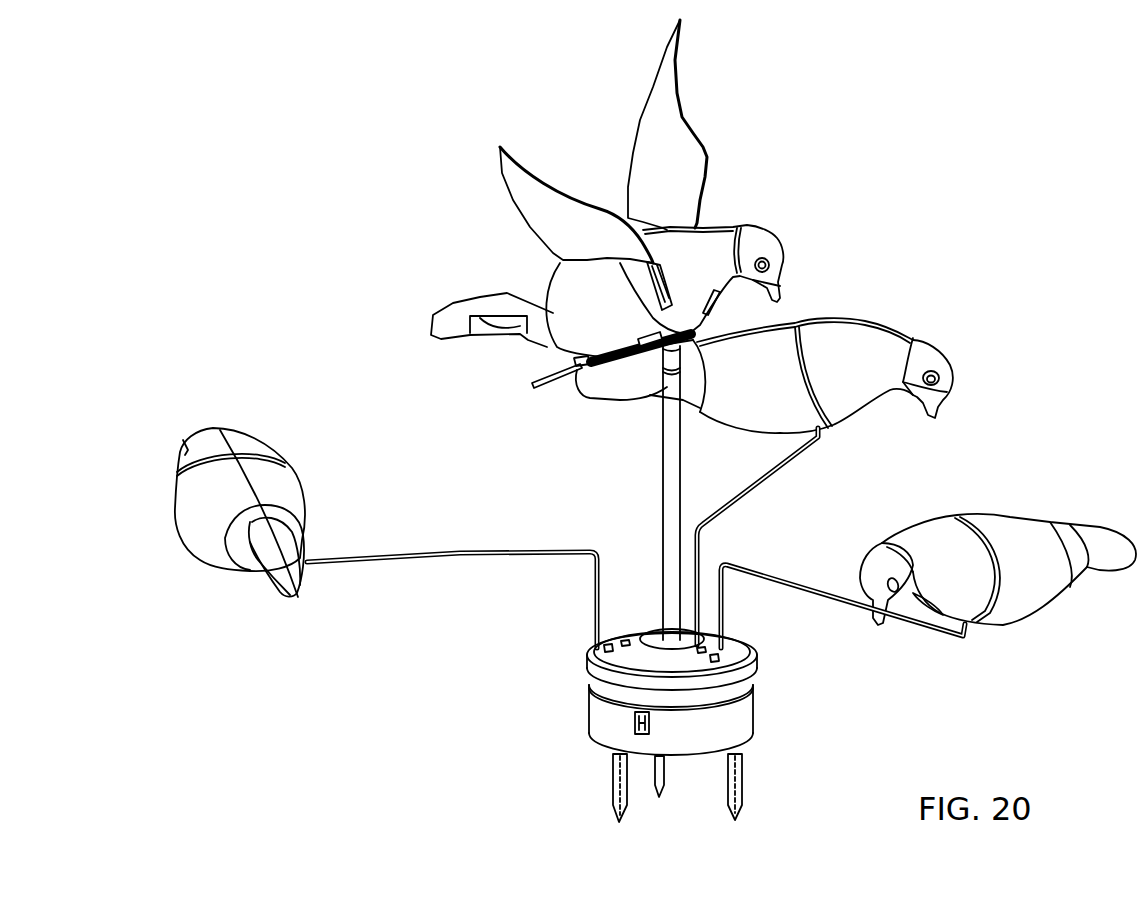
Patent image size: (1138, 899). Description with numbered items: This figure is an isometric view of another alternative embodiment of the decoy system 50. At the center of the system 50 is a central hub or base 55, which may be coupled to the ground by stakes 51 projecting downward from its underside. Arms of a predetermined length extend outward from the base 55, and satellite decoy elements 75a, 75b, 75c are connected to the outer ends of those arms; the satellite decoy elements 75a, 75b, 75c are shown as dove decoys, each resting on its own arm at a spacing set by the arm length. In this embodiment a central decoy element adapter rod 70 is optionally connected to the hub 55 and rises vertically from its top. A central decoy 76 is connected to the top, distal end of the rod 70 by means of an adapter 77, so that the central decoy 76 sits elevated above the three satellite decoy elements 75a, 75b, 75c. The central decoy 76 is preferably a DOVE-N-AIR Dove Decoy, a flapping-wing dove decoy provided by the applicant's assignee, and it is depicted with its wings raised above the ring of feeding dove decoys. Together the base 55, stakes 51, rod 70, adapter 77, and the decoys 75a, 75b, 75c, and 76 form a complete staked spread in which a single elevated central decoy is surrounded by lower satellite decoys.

The decoy system 50 is at (265, 152).
The stakes 51 is at (617, 792).
The central hub or base 55 is at (518, 720).
The central decoy element adapter rod 70 is at (532, 471).
The satellite decoy element 75a is at (980, 320).
The satellite decoy element 75b is at (958, 655).
The satellite decoy element 75c is at (252, 607).
The central decoy 76 is at (743, 131).
The adapter 77 is at (607, 368).